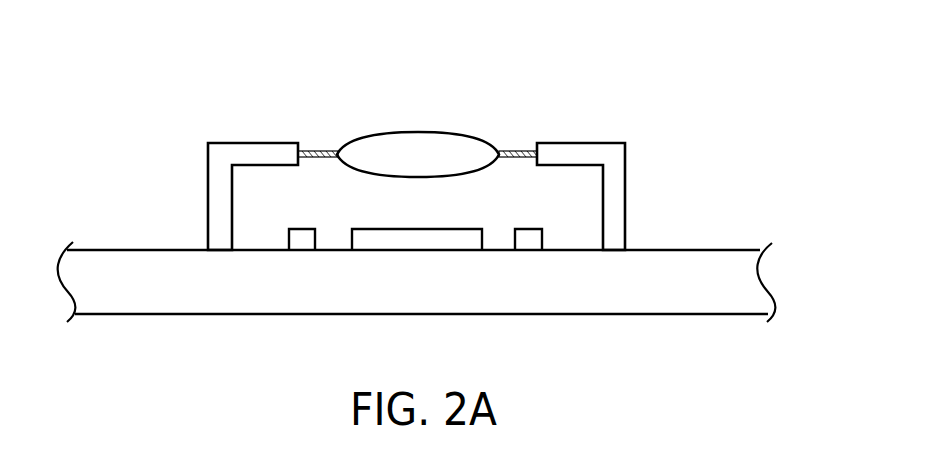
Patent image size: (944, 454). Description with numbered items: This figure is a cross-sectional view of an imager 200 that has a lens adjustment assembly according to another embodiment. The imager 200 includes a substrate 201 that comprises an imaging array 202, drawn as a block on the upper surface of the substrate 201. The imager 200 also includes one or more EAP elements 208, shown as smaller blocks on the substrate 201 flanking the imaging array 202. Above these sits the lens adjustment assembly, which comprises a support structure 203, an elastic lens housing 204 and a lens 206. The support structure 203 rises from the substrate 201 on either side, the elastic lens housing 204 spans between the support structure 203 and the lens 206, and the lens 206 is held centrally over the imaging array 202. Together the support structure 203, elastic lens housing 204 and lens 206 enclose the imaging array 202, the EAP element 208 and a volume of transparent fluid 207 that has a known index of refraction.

The imager 200 is at (125, 88).
The substrate 201 is at (724, 298).
The imaging array 202 is at (383, 243).
The support structure 203 is at (218, 177).
The elastic lens housing 204 is at (327, 150).
The lens 206 is at (434, 163).
The transparent fluid 207 is at (293, 211).
The EAP element 208 is at (532, 243).